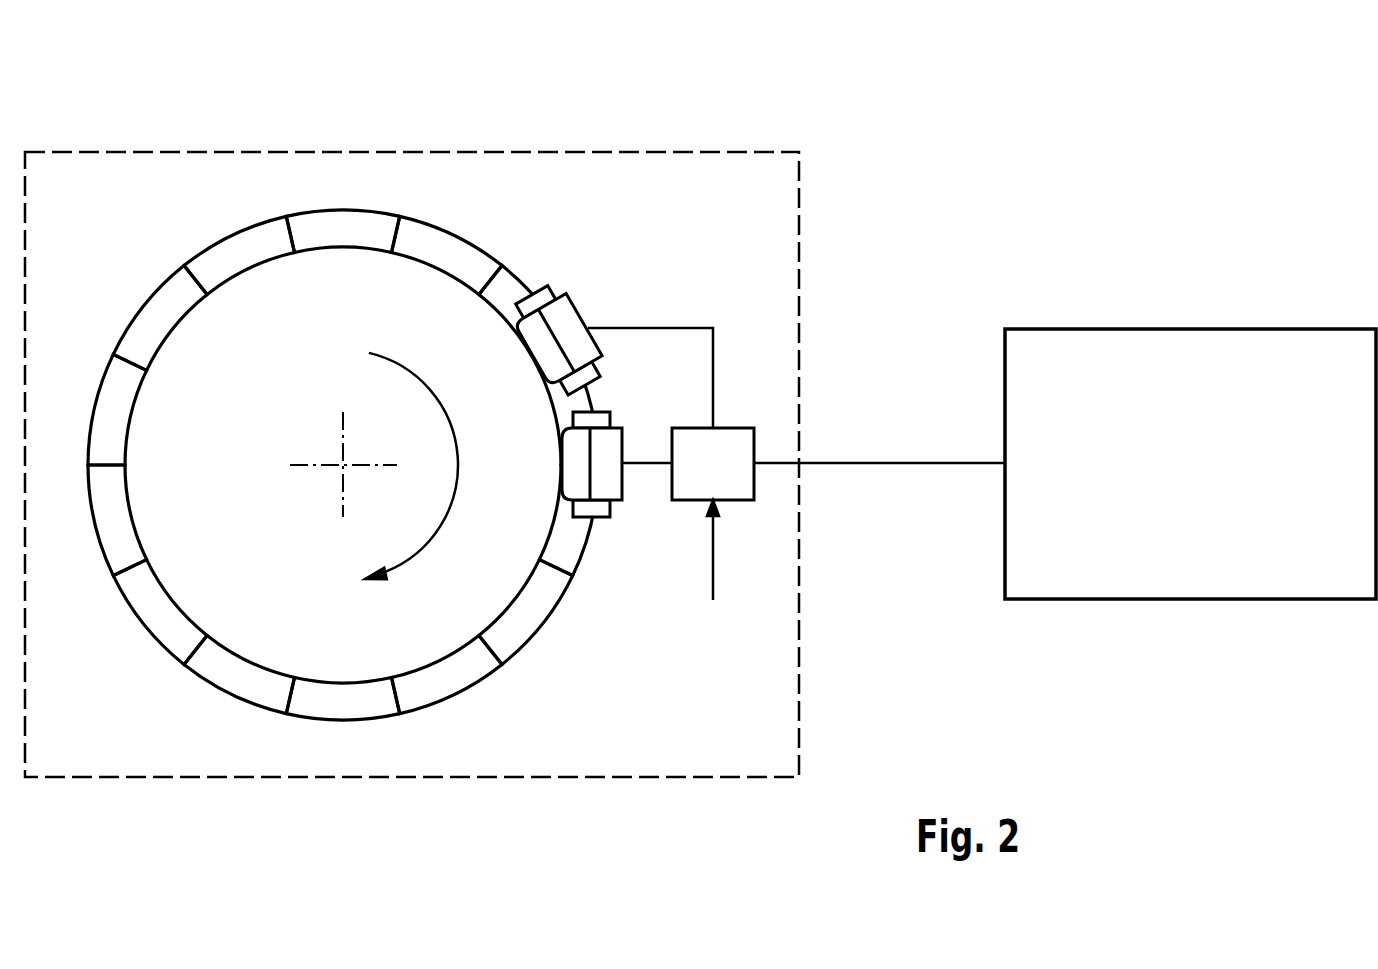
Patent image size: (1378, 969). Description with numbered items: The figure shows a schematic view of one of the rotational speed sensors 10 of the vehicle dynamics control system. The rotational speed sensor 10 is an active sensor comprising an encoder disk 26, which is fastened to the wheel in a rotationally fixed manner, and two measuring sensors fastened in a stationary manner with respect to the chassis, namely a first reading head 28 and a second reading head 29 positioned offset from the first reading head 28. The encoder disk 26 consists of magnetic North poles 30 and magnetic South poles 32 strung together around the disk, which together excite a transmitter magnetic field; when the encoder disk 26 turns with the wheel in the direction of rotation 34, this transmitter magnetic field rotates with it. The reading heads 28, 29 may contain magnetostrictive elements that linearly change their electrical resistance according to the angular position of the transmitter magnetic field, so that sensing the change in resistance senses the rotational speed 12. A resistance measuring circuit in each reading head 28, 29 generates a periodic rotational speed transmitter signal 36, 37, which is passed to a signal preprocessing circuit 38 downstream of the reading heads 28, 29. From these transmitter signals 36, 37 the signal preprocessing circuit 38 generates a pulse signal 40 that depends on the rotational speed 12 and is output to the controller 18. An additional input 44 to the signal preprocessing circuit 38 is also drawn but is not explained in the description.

The rotational speed sensor 10 is at (465, 150).
The rotational speed 12 is at (1065, 401).
The controller 18 is at (1190, 328).
The encoder disk 26 is at (353, 466).
The first reading head 28 is at (625, 500).
The second reading head 29 is at (582, 298).
The magnetic North poles 30 is at (342, 208).
The magnetic South poles 32 is at (232, 232).
The direction of rotation 34 is at (457, 487).
The rotational speed transmitter signal 36 is at (650, 462).
The rotational speed transmitter signal 37 is at (687, 327).
The signal preprocessing circuit 38 is at (728, 427).
The pulse signal 40 is at (880, 465).
The supply signal 44 is at (714, 560).